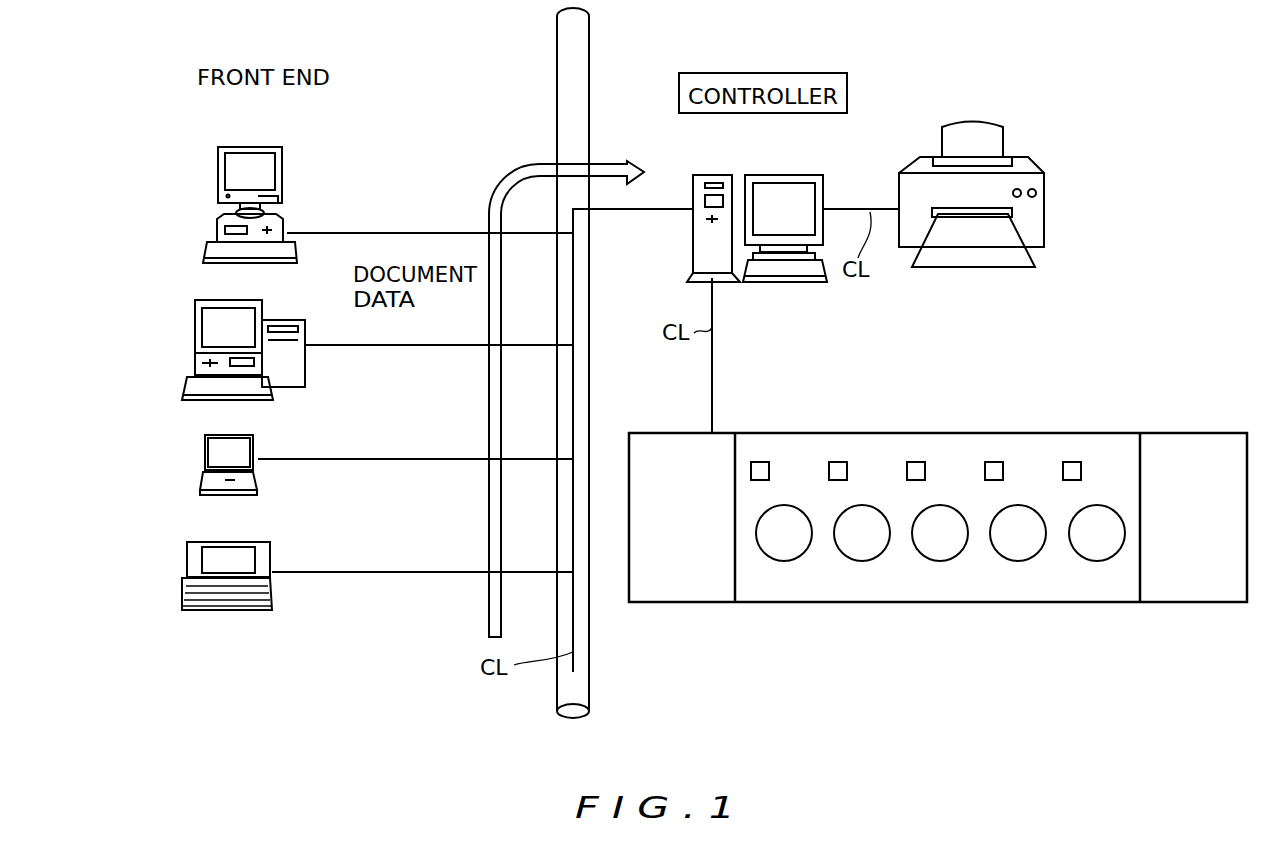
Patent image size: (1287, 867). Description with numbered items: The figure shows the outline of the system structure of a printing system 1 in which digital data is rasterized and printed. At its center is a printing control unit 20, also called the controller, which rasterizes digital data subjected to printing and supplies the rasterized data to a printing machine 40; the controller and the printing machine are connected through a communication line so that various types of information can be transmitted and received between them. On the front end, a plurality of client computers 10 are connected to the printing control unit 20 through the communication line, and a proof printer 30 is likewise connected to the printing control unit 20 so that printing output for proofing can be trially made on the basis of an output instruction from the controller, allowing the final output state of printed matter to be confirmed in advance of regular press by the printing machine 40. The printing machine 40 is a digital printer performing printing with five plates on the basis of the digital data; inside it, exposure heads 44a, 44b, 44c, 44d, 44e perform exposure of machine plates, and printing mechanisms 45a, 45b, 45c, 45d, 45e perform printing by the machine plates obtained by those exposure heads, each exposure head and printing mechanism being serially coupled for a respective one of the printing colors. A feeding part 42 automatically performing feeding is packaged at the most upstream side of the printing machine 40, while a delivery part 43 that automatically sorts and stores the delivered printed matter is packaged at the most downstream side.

The printing system 1 is at (1182, 97).
The client computer 10 is at (268, 147).
The printing control unit 20 is at (803, 175).
The proof printer 30 is at (1018, 157).
The printing machine 40 is at (1130, 412).
The feeding part 42 is at (680, 603).
The delivery part 43 is at (1190, 603).
The exposure head 44a is at (760, 462).
The exposure head 44b is at (838, 462).
The exposure head 44c is at (916, 462).
The exposure head 44d is at (994, 462).
The exposure head 44e is at (1072, 462).
The printing mechanism 45a is at (784, 561).
The printing mechanism 45b is at (862, 561).
The printing mechanism 45c is at (940, 561).
The printing mechanism 45d is at (1018, 561).
The printing mechanism 45e is at (1097, 561).